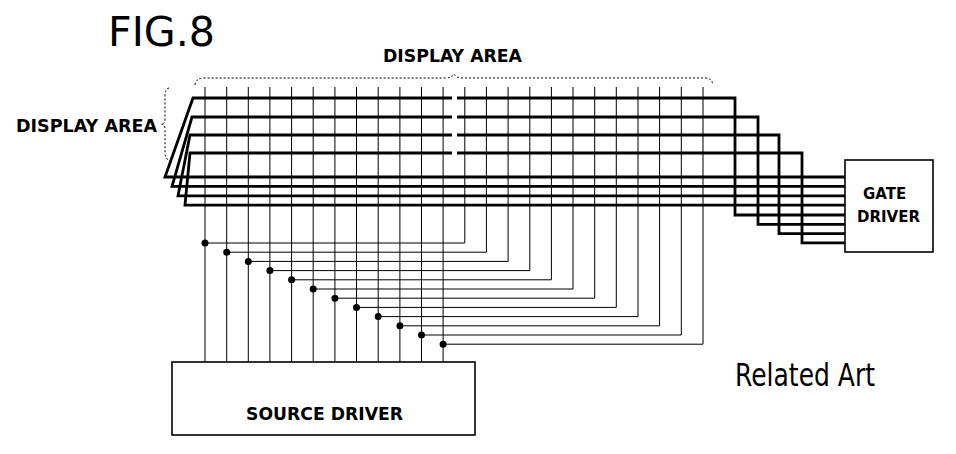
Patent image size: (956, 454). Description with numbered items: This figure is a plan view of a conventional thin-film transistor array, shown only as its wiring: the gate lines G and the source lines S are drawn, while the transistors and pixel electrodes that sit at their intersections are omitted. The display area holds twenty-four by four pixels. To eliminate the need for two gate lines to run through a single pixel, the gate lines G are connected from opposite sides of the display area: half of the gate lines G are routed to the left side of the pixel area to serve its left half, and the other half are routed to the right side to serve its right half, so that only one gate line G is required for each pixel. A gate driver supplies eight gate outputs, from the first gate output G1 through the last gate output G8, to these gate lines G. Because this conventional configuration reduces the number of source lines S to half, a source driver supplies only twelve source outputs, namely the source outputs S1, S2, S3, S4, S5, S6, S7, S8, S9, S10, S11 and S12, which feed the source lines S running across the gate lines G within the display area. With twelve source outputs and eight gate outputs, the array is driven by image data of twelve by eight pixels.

The gate line G is at (510, 153).
The source line S is at (428, 243).
The gate output G1 is at (516, 156).
The gate output G8 is at (526, 202).
The source output S1 is at (206, 234).
The source output S2 is at (227, 243).
The source output S3 is at (251, 234).
The source output S4 is at (270, 243).
The source output S5 is at (294, 234).
The source output S6 is at (313, 243).
The source output S7 is at (336, 234).
The source output S8 is at (356, 243).
The source output S9 is at (379, 234).
The source output S10 is at (401, 243).
The source output S11 is at (424, 234).
The source output S12 is at (445, 243).